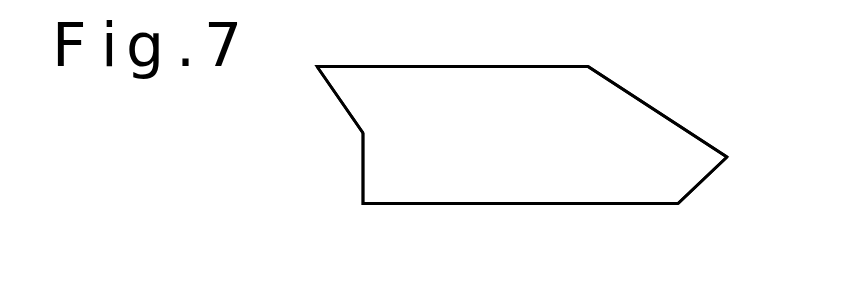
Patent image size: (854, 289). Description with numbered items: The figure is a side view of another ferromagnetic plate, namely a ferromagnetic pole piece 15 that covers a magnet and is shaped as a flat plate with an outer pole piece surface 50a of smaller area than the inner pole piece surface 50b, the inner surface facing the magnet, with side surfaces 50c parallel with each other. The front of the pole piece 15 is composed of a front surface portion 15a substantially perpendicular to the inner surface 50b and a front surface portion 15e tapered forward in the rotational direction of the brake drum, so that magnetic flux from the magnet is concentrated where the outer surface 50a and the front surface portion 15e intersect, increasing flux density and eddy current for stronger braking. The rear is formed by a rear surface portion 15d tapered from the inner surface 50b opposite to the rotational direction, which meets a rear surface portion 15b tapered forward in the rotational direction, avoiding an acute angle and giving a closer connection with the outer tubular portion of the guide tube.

The ferromagnetic pole piece 15 is at (430, 63).
The front surface portion 15a is at (361, 187).
The rear surface portion 15b is at (675, 117).
The rear surface portion 15d is at (705, 183).
The front surface portion 15e is at (340, 107).
The outer pole piece surface 50a is at (550, 65).
The inner pole piece surface 50b is at (505, 205).
The side surface 50c is at (606, 198).